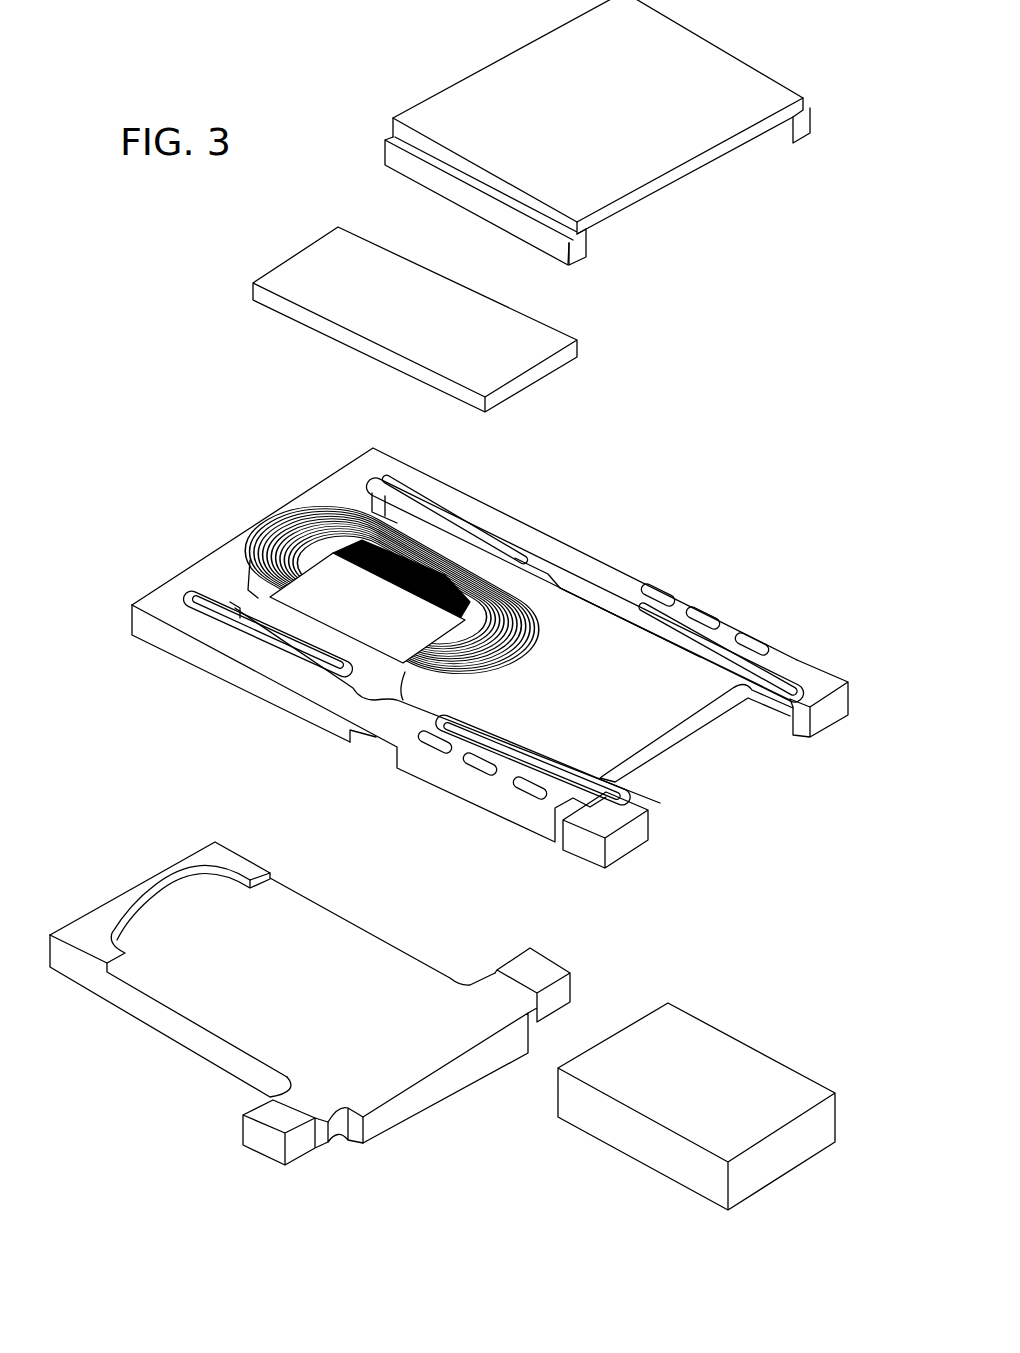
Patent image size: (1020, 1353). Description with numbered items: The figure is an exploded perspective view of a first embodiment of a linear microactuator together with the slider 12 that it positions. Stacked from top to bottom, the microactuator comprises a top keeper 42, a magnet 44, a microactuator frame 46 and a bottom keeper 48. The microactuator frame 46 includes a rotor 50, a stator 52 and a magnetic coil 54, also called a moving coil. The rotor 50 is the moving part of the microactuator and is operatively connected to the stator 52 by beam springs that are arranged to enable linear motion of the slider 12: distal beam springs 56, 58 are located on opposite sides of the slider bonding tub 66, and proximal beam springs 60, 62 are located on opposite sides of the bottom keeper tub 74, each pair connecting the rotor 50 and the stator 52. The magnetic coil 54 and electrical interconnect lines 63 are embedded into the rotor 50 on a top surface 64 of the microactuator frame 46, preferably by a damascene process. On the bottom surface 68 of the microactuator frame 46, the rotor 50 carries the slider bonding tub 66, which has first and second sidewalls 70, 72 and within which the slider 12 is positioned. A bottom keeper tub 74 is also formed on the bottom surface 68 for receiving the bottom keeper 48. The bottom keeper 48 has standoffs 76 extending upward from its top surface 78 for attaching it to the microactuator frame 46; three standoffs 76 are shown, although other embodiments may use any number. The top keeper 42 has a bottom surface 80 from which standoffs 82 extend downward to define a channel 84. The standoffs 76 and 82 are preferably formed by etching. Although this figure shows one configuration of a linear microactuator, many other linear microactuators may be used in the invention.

The slider 12 is at (743, 1058).
The top keeper 42 is at (745, 200).
The magnet 44 is at (513, 357).
The microactuator frame 46 is at (345, 440).
The bottom keeper 48 is at (410, 1140).
The rotor 50 is at (460, 555).
The stator 52 is at (418, 487).
The magnetic coil 54 is at (310, 528).
The distal beam spring 56 is at (712, 641).
The distal beam spring 58 is at (535, 773).
The proximal beam spring 60 is at (493, 535).
The proximal beam spring 62 is at (243, 623).
The electrical interconnect lines 63 is at (583, 610).
The top surface 64 is at (212, 570).
The slider bonding tub 66 is at (655, 757).
The bottom surface 68 is at (292, 688).
The first sidewall 70 is at (733, 700).
The second sidewall 72 is at (615, 790).
The bottom keeper tub 74 is at (380, 745).
The standoffs 76 is at (100, 928).
The top surface 78 is at (225, 1005).
The bottom surface 80 is at (620, 213).
The standoffs 82 is at (800, 135).
The channel 84 is at (680, 185).